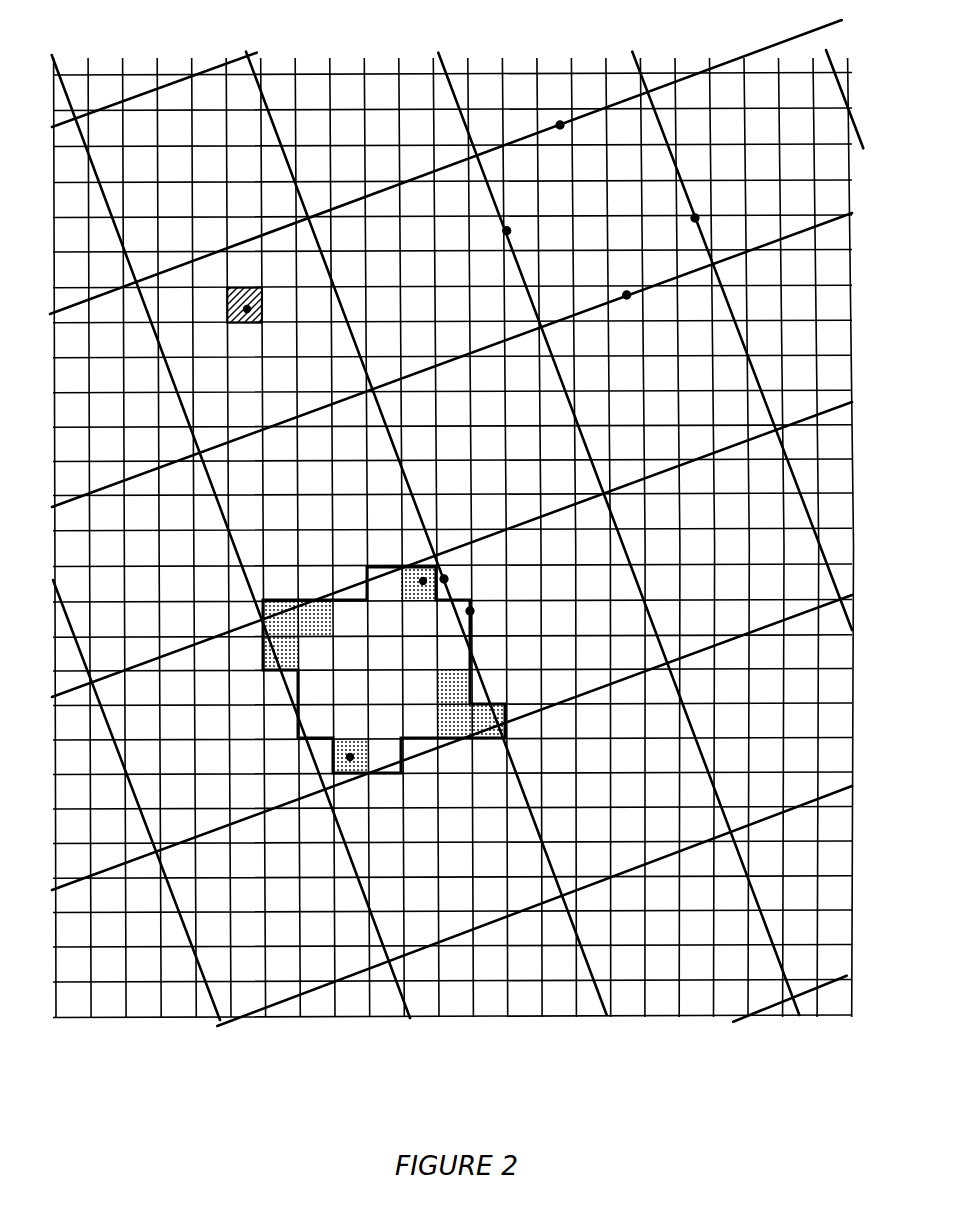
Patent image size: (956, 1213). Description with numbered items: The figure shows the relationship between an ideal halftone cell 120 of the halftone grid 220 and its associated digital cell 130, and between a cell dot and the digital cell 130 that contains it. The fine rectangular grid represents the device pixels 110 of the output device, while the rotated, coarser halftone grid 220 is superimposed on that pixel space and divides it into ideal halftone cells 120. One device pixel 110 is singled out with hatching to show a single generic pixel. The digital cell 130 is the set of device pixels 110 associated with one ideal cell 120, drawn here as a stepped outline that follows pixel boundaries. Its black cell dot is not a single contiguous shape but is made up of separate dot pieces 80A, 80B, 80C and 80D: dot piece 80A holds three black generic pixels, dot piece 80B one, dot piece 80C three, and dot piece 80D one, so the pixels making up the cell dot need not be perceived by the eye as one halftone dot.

The halftone grid 220 is at (560, 125).
The device pixel 110 is at (248, 309).
The dot piece 80A is at (298, 635).
The dot piece 80B is at (350, 757).
The dot piece 80C is at (470, 704).
The dot piece 80D is at (423, 581).
The ideal halftone cell 120 is at (444, 579).
The digital cell 130 is at (470, 611).